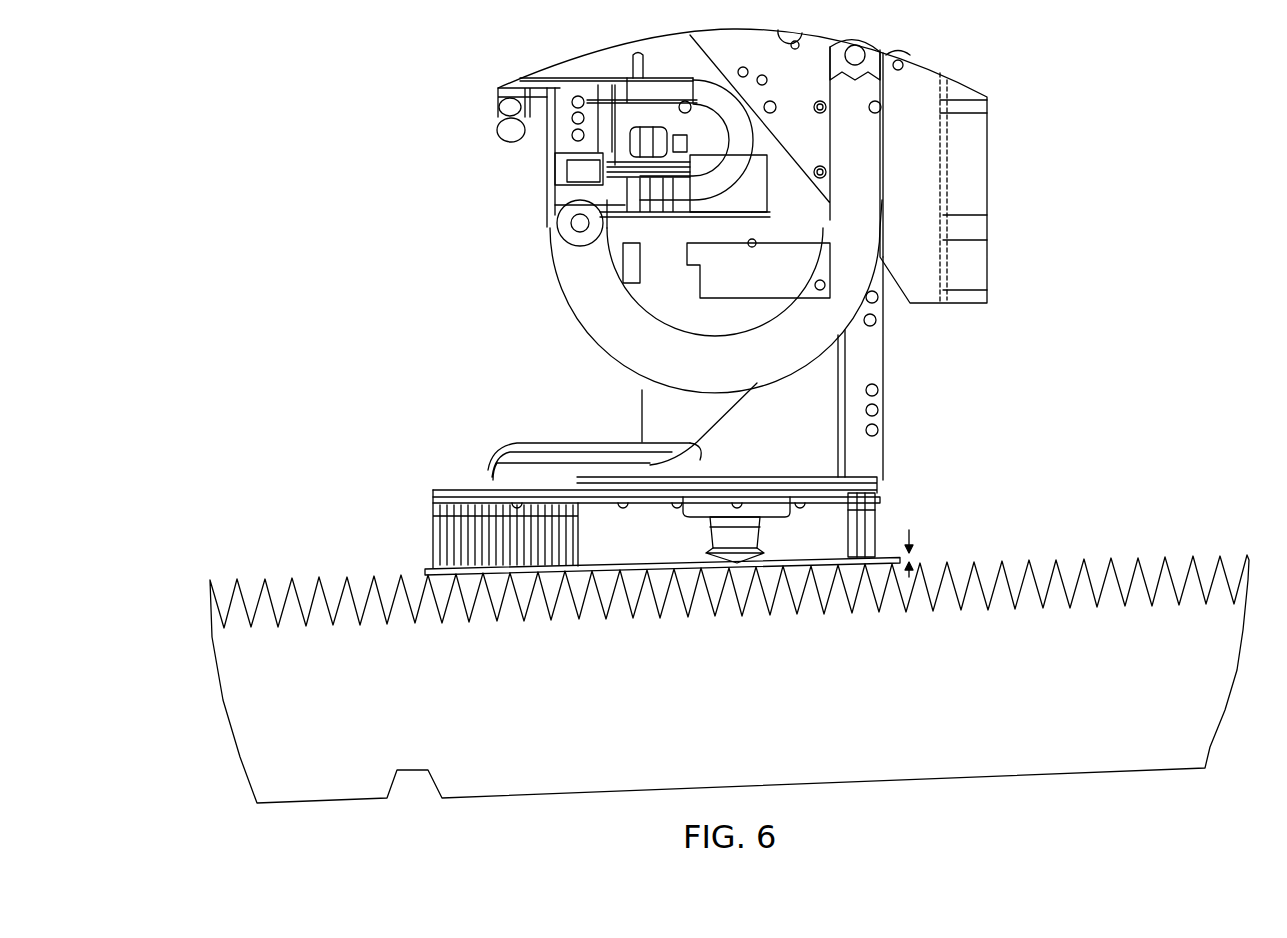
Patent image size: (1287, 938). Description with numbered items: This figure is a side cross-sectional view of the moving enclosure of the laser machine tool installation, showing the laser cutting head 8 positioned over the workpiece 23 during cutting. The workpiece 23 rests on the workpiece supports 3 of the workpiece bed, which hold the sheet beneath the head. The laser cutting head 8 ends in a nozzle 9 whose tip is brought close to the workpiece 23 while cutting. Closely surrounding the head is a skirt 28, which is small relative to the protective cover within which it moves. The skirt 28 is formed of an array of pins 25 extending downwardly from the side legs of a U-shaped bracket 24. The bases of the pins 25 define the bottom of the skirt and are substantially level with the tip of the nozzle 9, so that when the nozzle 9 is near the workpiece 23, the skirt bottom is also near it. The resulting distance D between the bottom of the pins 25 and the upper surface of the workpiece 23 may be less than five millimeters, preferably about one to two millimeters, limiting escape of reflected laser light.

The workpiece supports 3 is at (376, 585).
The laser cutting head 8 is at (783, 525).
The nozzle 9 is at (737, 560).
The workpiece 23 is at (585, 578).
The U-shaped bracket 24 is at (458, 492).
The pins 25 is at (580, 530).
The skirt 28 is at (877, 522).
The distance D is at (917, 558).